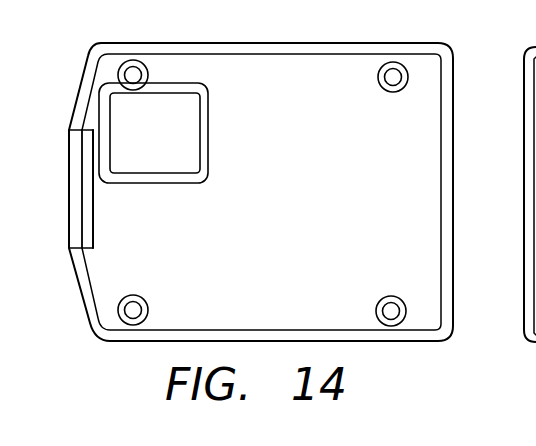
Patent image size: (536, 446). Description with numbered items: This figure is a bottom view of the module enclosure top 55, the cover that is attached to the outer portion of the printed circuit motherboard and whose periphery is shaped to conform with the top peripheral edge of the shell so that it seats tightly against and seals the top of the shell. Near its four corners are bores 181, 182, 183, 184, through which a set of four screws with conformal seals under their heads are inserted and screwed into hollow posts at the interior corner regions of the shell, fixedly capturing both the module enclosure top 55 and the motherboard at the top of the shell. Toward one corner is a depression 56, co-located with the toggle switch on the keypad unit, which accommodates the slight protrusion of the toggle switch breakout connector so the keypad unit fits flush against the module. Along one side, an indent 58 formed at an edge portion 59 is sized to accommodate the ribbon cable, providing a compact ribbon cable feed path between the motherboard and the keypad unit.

The module enclosure top 55 is at (270, 43).
The depression 56 is at (185, 133).
The indent 58 is at (75, 180).
The edge portion 59 is at (87, 210).
The bore 181 is at (131, 60).
The bore 182 is at (133, 325).
The bore 183 is at (392, 326).
The bore 184 is at (395, 62).